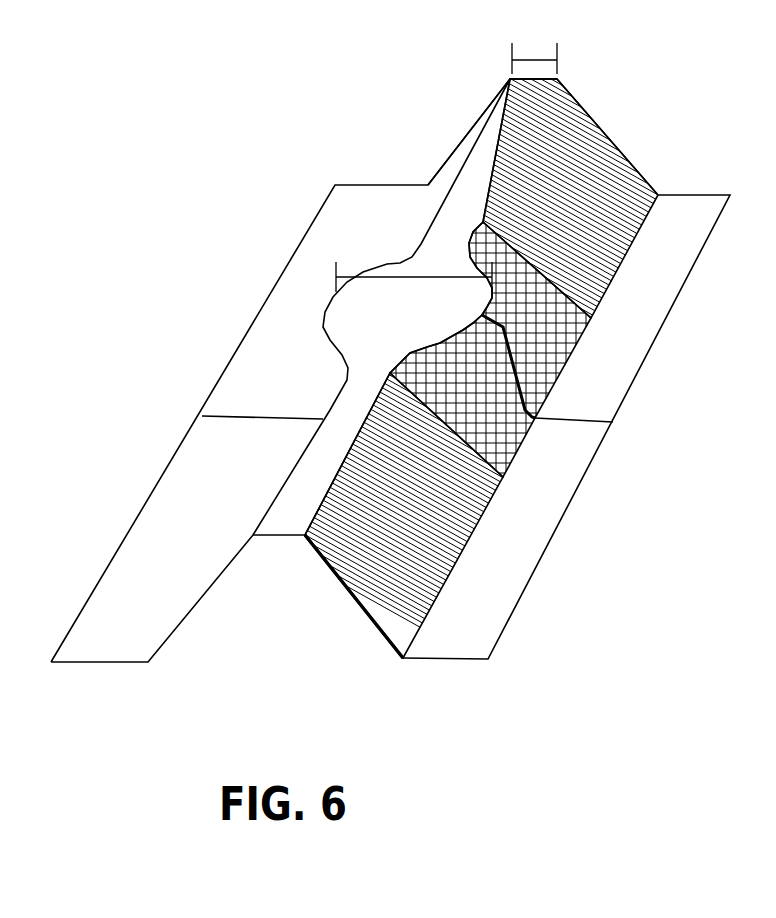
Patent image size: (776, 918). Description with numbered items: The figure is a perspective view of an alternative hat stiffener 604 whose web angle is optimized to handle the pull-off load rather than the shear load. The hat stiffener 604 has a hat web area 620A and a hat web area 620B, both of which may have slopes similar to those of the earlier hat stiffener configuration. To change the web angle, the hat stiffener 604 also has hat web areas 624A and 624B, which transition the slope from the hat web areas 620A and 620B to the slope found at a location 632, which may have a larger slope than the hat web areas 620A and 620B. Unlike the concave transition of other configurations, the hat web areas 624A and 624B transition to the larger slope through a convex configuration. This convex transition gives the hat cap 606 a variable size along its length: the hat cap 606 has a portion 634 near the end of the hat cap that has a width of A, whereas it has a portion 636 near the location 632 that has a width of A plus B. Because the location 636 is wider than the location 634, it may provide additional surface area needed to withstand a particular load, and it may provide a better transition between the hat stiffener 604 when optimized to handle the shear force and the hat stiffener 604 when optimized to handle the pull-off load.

The hat stiffener 604 is at (390, 337).
The hat cap 606 is at (483, 158).
The portion of the hat cap 634 is at (515, 102).
The portion of the hat cap 636 is at (370, 270).
The location 632 is at (428, 317).
The hat web area 620A is at (567, 205).
The hat web area 624A is at (533, 362).
The hat web area 624B is at (500, 428).
The hat web area 620B is at (410, 583).